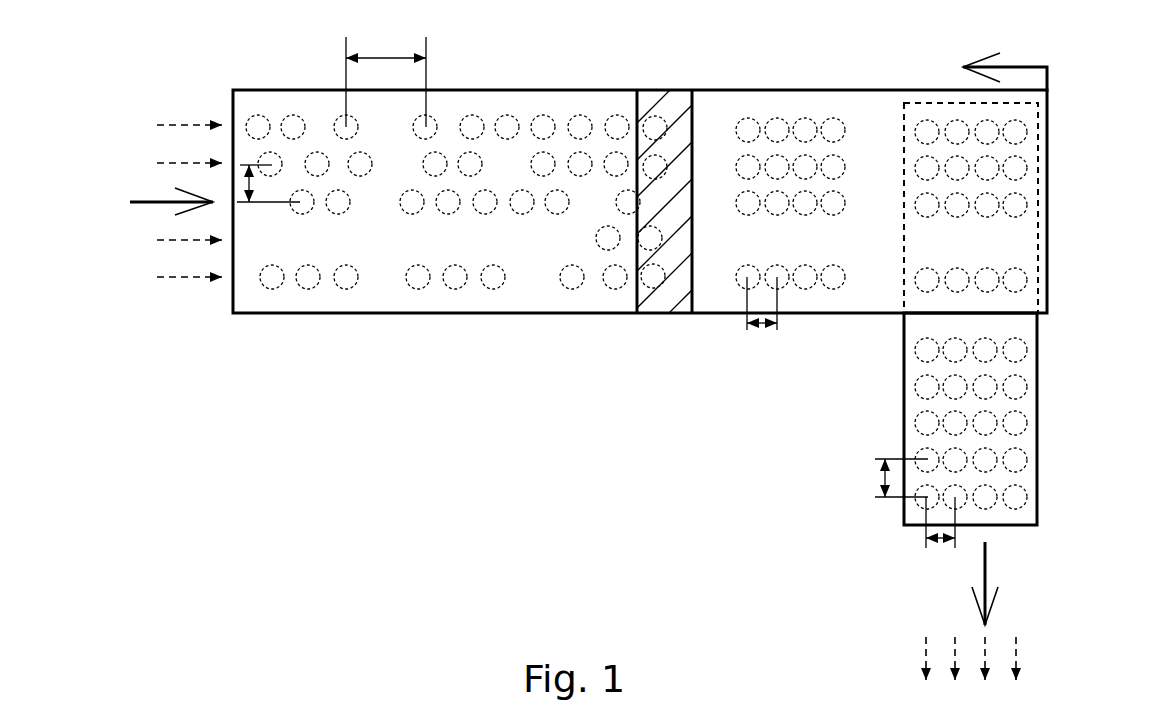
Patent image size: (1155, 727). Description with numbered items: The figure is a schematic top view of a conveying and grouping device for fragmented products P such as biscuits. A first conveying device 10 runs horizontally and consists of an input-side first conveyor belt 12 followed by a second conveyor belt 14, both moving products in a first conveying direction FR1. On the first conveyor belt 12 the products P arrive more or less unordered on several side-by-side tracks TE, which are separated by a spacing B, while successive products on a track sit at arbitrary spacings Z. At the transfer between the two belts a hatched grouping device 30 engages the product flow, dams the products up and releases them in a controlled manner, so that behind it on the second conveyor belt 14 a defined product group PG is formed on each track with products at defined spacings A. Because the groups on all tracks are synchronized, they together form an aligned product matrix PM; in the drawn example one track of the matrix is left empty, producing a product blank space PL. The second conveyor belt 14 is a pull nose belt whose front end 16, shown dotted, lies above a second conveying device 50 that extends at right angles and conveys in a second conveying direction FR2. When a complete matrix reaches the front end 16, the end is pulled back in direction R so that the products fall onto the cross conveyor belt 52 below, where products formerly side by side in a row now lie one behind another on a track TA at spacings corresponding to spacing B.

The first conveying device 10 is at (590, 320).
The first conveyor belt 12 is at (380, 298).
The second conveyor belt 14 is at (873, 295).
The front end 16 is at (1047, 135).
The grouping device 30 is at (675, 105).
The second conveying device 50 is at (893, 522).
The conveyor belt 52 is at (915, 365).
The products P is at (507, 127).
The product matrix PM is at (937, 117).
The product group PG is at (780, 205).
The product blank space PL is at (978, 248).
The spacing Z is at (386, 77).
The spacing A is at (851, 426).
The spacing B is at (582, 331).
The direction R is at (1005, 61).
The first conveying direction FR1 is at (153, 210).
The second conveying direction FR2 is at (1009, 583).
The tracks TE is at (189, 215).
The track TA is at (951, 658).